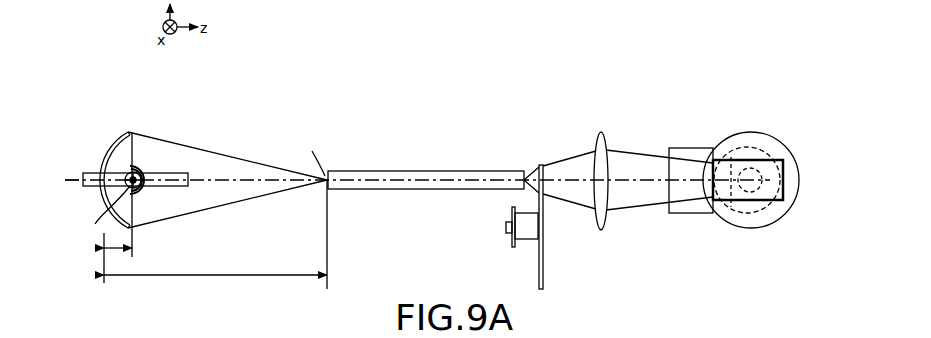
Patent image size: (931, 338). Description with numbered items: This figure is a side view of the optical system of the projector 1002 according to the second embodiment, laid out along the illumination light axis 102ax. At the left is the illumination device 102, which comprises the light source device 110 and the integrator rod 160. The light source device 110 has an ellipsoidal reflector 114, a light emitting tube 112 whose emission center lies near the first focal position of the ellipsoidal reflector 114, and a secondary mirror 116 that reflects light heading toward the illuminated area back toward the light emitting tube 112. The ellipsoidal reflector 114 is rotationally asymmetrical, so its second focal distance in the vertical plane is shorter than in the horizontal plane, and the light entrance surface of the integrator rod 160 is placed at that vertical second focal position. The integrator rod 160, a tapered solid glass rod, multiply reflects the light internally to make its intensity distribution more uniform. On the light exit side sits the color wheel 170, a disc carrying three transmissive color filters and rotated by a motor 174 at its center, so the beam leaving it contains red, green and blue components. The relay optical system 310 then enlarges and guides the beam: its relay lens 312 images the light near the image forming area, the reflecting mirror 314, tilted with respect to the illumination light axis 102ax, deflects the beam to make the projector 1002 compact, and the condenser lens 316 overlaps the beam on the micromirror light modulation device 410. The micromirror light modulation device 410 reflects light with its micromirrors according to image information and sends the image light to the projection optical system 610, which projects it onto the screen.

The illumination device 102 is at (527, 70).
The illumination light axis 102ax is at (69, 175).
The light source device 110 is at (210, 97).
The light emitting tube 112 is at (135, 172).
The ellipsoidal reflector 114 is at (127, 133).
The secondary mirror 116 is at (148, 168).
The integrator rod 160 is at (447, 170).
The color wheel 170 is at (540, 163).
The motor 174 is at (501, 243).
The projector 1002 is at (593, 55).
The relay optical system 310 is at (745, 97).
The relay lens 312 is at (598, 132).
The reflecting mirror 314 is at (692, 148).
The condenser lens 316 is at (747, 131).
The projection optical system 610 is at (768, 152).
The micromirror light modulation device 410 is at (750, 201).